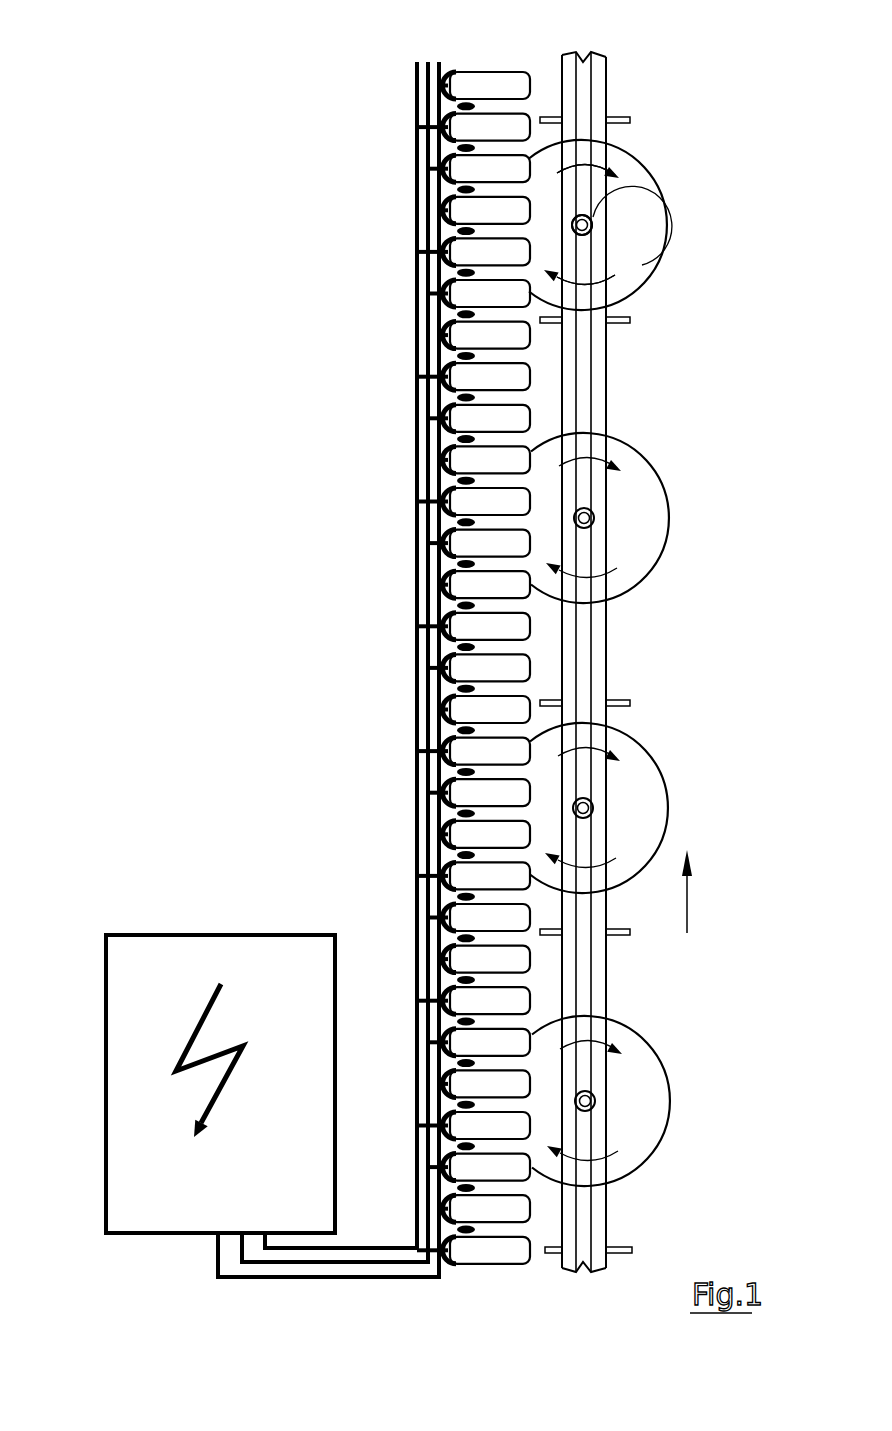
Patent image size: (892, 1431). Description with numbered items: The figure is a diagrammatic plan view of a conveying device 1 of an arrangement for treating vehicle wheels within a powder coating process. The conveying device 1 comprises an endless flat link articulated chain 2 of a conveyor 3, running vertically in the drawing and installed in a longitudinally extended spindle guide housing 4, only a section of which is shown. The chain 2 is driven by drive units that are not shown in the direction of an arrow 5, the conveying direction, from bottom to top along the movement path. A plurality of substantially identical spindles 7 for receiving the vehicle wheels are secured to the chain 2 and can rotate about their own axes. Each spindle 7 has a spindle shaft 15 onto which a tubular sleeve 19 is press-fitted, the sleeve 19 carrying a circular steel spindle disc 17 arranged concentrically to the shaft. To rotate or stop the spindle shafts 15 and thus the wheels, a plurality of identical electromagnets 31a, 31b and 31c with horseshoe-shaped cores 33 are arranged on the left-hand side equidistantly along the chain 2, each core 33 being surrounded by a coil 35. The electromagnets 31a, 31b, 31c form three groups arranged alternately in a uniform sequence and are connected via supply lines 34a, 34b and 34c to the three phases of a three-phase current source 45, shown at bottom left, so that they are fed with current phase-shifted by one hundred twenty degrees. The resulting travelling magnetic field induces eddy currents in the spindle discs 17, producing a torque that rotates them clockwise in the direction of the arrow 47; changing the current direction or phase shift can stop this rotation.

The conveying device 1 is at (150, 168).
The endless flat link articulated chain 2 is at (596, 620).
The conveyor 3 is at (587, 652).
The spindle guide housing 4 is at (600, 697).
The arrow (conveying direction) 5 is at (690, 910).
The spindle 7 is at (650, 141).
The spindle shaft 15 is at (667, 258).
The spindle disc 17 is at (638, 280).
The sleeve 19 is at (660, 195).
The electromagnet of the first group 31a is at (478, 243).
The electromagnet of the second group 31b is at (478, 201).
The electromagnet of the third group 31c is at (478, 160).
The horseshoe-shaped core 33 is at (517, 88).
The supply line 34a is at (415, 888).
The supply line 34b is at (420, 818).
The supply line 34c is at (415, 793).
The coil 35 is at (458, 72).
The three-phase current source 45 is at (158, 959).
The arrow (direction of rotation) 47 is at (588, 280).